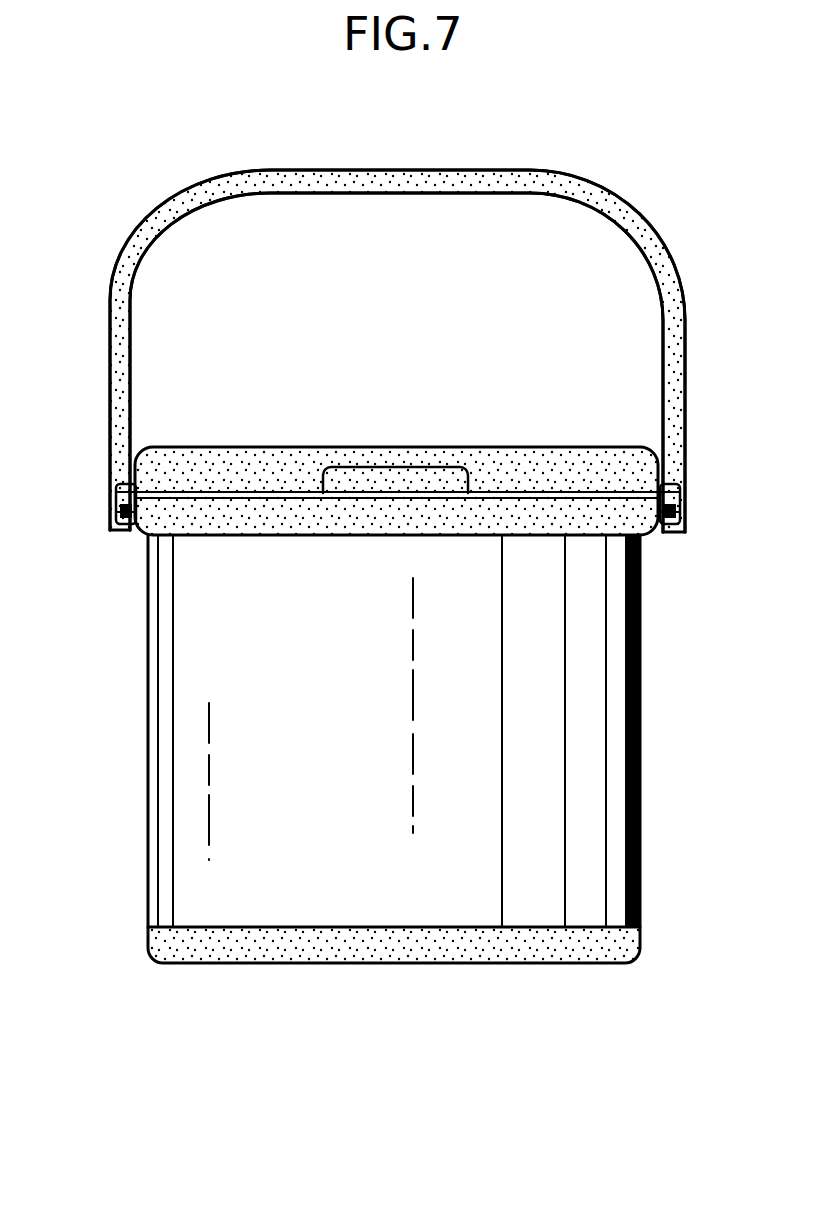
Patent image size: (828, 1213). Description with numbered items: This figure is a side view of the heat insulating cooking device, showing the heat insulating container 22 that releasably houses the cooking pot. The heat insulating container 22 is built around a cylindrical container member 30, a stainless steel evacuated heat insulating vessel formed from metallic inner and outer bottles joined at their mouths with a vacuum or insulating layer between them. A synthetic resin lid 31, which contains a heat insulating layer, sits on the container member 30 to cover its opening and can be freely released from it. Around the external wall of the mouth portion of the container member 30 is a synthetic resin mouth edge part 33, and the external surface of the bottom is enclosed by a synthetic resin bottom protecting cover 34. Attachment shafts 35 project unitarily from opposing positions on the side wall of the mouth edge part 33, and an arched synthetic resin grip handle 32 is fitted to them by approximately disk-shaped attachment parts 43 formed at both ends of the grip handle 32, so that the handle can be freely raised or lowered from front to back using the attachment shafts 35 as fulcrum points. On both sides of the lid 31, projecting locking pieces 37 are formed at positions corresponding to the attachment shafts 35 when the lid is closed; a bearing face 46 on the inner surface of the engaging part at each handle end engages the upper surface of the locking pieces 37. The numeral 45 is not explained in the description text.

The heat insulating container 22 is at (641, 750).
The container member 30 is at (175, 742).
The lid 31 is at (366, 446).
The grip handle 32 is at (470, 180).
The mouth edge part 33 is at (410, 521).
The bottom protecting cover 34 is at (380, 945).
The attachment shaft 35 is at (118, 505).
The locking piece 37 is at (128, 473).
The attachment part 43 is at (105, 518).
The hinge lower portion 45 is at (114, 522).
The bearing face 46 is at (128, 489).